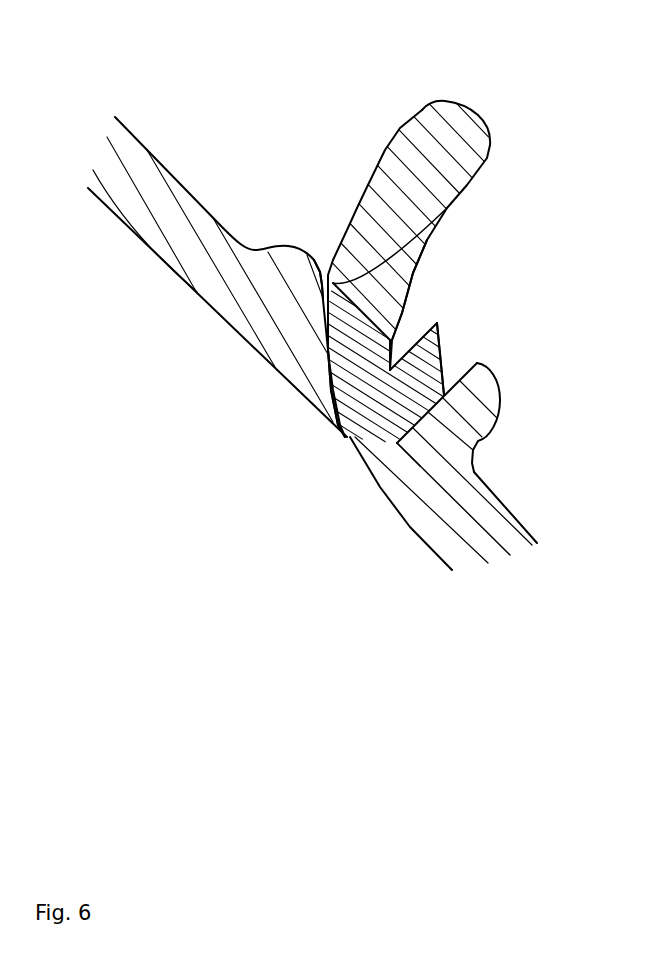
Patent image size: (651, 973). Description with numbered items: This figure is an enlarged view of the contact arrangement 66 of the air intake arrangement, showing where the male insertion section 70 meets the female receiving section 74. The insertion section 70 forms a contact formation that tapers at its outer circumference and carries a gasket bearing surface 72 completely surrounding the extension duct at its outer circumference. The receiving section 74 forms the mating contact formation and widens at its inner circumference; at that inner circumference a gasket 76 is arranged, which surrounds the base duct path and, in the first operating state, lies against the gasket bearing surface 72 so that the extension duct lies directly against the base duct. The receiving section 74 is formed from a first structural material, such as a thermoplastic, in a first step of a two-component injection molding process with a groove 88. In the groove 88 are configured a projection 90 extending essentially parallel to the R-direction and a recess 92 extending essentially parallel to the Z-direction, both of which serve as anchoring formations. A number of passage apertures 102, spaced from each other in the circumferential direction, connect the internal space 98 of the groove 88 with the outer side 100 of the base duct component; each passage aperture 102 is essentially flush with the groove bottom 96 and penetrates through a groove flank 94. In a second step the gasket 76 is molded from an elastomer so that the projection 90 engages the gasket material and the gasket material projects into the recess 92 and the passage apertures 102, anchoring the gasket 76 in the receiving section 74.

The contact arrangement 66 is at (247, 493).
The insertion section 70 is at (319, 220).
The gasket bearing surface 72 is at (327, 340).
The receiving section 74 is at (362, 146).
The gasket 76 is at (361, 414).
The groove 88 is at (398, 385).
The projection 90 is at (421, 279).
The recess 92 is at (397, 459).
The groove flank 94 is at (447, 209).
The groove bottom 96 is at (474, 452).
The internal space 98 is at (363, 413).
The outer side 100 is at (502, 360).
The passage apertures 102 is at (446, 351).